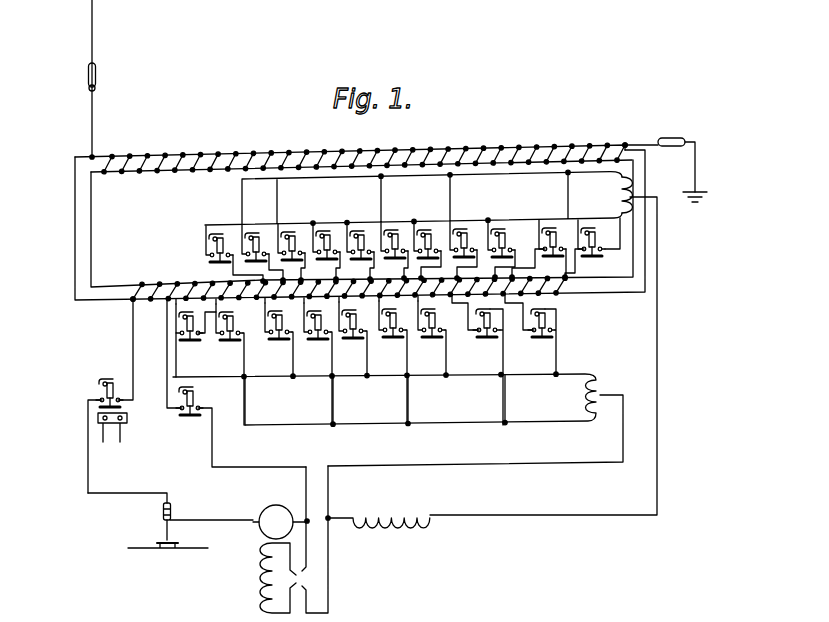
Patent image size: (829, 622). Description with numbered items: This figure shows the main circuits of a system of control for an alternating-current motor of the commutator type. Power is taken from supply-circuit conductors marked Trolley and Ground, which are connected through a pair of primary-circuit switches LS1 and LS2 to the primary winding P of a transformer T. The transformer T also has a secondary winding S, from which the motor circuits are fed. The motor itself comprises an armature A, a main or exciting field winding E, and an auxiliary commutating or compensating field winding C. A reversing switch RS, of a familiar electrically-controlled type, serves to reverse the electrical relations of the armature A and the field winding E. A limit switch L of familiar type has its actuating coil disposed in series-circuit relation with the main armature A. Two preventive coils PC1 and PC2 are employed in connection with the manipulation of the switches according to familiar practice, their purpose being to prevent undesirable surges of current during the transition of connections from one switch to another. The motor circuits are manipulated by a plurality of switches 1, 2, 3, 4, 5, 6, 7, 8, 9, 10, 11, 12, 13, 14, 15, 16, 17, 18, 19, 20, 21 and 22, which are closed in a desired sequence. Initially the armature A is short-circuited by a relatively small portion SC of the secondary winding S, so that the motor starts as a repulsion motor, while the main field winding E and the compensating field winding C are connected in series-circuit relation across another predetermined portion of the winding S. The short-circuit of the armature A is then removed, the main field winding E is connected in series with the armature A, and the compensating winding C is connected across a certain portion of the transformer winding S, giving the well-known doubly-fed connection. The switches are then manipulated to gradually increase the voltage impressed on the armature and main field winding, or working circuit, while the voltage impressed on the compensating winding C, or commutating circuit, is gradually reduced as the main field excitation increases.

The switch 1 is at (187, 425).
The switch 2 is at (225, 224).
The switch 3 is at (261, 224).
The switch 4 is at (297, 223).
The switch 5 is at (332, 223).
The switch 6 is at (401, 222).
The switch 7 is at (246, 350).
The switch 8 is at (199, 348).
The switch 9 is at (275, 346).
The switch 10 is at (368, 223).
The switch 11 is at (311, 345).
The switch 12 is at (436, 222).
The switch 13 is at (348, 344).
The switch 14 is at (473, 221).
The switch 15 is at (385, 343).
The switch 16 is at (513, 221).
The switch 17 is at (425, 343).
The switch 18 is at (563, 220).
The switch 19 is at (476, 343).
The switch 20 is at (600, 220).
The switch 21 is at (531, 343).
The switch 22 is at (127, 418).
The primary-circuit switch LS1 is at (97, 78).
The primary-circuit switch LS2 is at (675, 150).
The primary winding P is at (347, 160).
The secondary winding S is at (189, 285).
The portion of the secondary winding SC is at (144, 313).
The transformer T is at (89, 240).
The preventive coil PC1 is at (616, 186).
The preventive coil PC2 is at (598, 396).
The limit switch L is at (178, 535).
The armature A is at (288, 510).
The main or exciting field winding E is at (262, 579).
The reversing switch RS is at (312, 578).
The auxiliary commutating or compensating field winding C is at (379, 512).
The supply-circuit conductor Ground is at (703, 209).